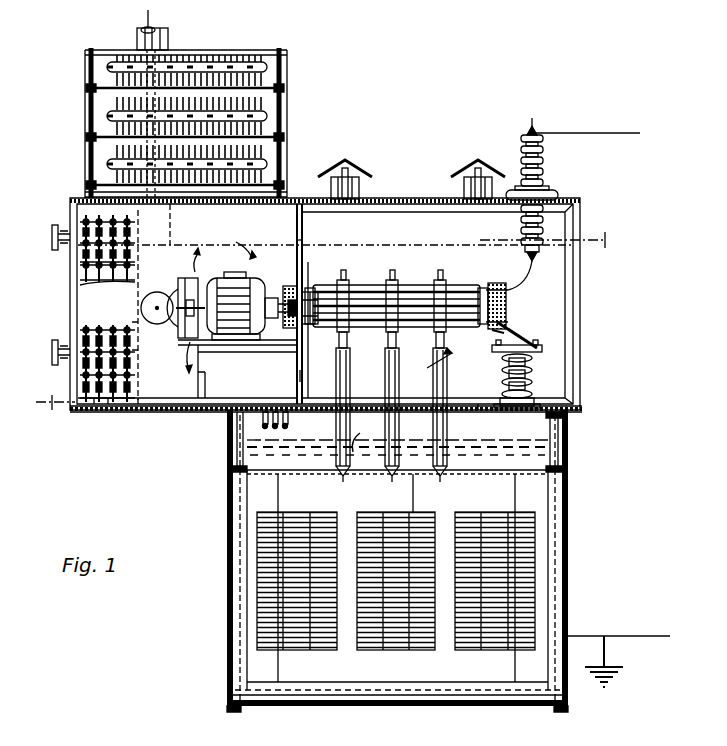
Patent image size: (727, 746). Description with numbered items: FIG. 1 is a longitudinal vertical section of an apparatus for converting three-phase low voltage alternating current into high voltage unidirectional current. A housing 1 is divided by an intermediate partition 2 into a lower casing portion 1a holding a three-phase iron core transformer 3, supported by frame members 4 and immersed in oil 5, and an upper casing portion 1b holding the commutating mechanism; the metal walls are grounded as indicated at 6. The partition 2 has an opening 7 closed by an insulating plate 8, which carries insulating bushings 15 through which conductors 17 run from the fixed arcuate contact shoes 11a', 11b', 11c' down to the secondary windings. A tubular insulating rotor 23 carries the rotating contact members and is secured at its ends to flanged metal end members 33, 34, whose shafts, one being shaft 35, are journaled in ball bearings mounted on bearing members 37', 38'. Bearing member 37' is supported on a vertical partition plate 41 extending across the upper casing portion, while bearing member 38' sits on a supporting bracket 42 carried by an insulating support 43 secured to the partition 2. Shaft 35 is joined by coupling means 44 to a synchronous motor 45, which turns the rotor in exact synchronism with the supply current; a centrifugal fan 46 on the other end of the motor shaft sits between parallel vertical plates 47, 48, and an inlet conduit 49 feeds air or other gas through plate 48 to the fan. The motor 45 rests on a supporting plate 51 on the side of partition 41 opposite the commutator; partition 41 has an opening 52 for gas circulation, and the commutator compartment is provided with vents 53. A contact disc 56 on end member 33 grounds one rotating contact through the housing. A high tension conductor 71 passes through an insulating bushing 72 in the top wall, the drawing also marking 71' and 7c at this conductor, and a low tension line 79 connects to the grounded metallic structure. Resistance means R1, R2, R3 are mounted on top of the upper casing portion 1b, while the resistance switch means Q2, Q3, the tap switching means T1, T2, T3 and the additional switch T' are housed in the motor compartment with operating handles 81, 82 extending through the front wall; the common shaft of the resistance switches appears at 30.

The housing 1 is at (584, 341).
The lower casing portion 1a is at (568, 492).
The upper casing portion 1b is at (402, 200).
The intermediate partition 2 is at (585, 438).
The three-phase iron core transformer 3 is at (485, 672).
The frame members 4 is at (260, 481).
The oil 5 is at (245, 440).
The electrical ground connection 6 is at (604, 655).
The opening 7 is at (135, 326).
The line conductor 7c is at (640, 133).
The insulating plate 8 is at (465, 412).
The fixed arcuate contact shoe 11a' is at (361, 291).
The fixed arcuate contact shoe 11b' is at (410, 291).
The fixed arcuate contact shoe 11c' is at (456, 291).
The insulating bushings 15 is at (385, 372).
The electrical conductor 17 is at (365, 436).
The tubular rotor 23 is at (403, 327).
The switch assembly 30 is at (100, 220).
The flanged metal end member 33 is at (345, 283).
The flanged metal end member 34 is at (452, 351).
The shaft 35 is at (292, 328).
The bearing member 37' is at (279, 293).
The bearing member 38' is at (501, 289).
The vertical partition plate 41 is at (297, 240).
The supporting bracket 42 is at (517, 338).
The insulating support 43 is at (531, 377).
The coupling means 44 is at (272, 320).
The synchronous motor 45 is at (232, 278).
The centrifugal fan 46 is at (178, 359).
The vertical plate 47 is at (203, 374).
The vertical plate 48 is at (178, 290).
The inlet conduit 49 is at (141, 308).
The supporting plate 51 is at (230, 345).
The opening 52 is at (298, 378).
The vents 53 is at (364, 170).
The contact disc 56 is at (308, 265).
The high tension conductor 71 is at (547, 185).
The bushing lead 71' is at (529, 275).
The insulating bushing 72 is at (546, 176).
The low tension line 79 is at (655, 636).
The operating handle 81 is at (52, 237).
The operating handle 82 is at (52, 351).
The resistance means R1 is at (272, 163).
The resistance means R2 is at (272, 116).
The resistance means R3 is at (270, 68).
The switch means Q2 is at (83, 285).
The switch means Q3 is at (78, 265).
The switching means T1 is at (110, 404).
The switching means T2 is at (97, 404).
The switching means T3 is at (80, 370).
The additional switch T' is at (128, 423).